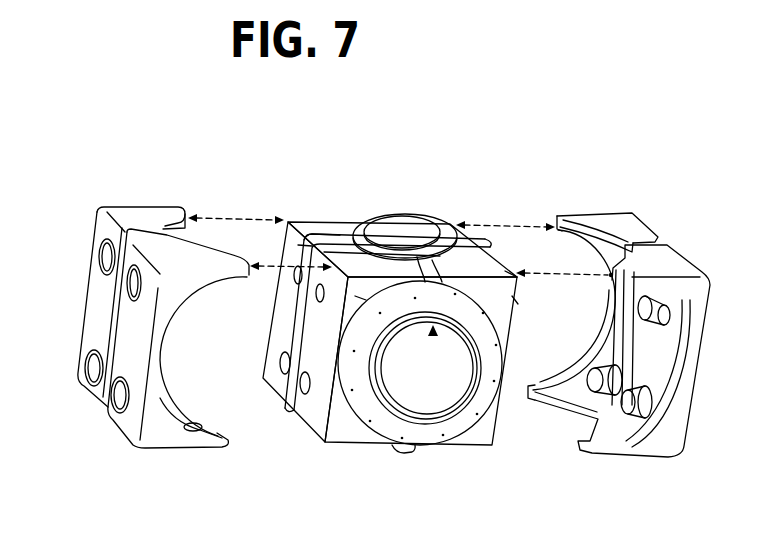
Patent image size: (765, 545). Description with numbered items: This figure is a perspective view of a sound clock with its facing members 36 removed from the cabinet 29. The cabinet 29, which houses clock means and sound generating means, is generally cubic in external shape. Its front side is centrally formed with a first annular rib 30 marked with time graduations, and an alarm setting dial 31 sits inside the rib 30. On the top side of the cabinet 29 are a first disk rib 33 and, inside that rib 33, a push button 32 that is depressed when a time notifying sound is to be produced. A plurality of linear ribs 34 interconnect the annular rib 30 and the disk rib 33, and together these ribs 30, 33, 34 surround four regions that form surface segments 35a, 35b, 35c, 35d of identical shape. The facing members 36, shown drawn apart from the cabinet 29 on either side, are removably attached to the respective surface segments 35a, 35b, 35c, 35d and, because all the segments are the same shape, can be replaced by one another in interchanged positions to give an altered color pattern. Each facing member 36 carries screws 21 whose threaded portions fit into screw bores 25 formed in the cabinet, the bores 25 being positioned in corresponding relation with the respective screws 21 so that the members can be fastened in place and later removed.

The screw 21 is at (93, 247).
The screw bore 25 is at (292, 293).
The cabinet 29 is at (342, 228).
The first annular rib 30 is at (375, 433).
The alarm setting dial 31 is at (435, 400).
The push button 32 is at (402, 226).
The first disk rib 33 is at (443, 222).
The linear rib 34 is at (322, 232).
The surface segment 35a is at (360, 298).
The surface segment 35b is at (292, 242).
The surface segment 35c is at (520, 300).
The surface segment 35d is at (450, 235).
The facing member 36 is at (90, 297).